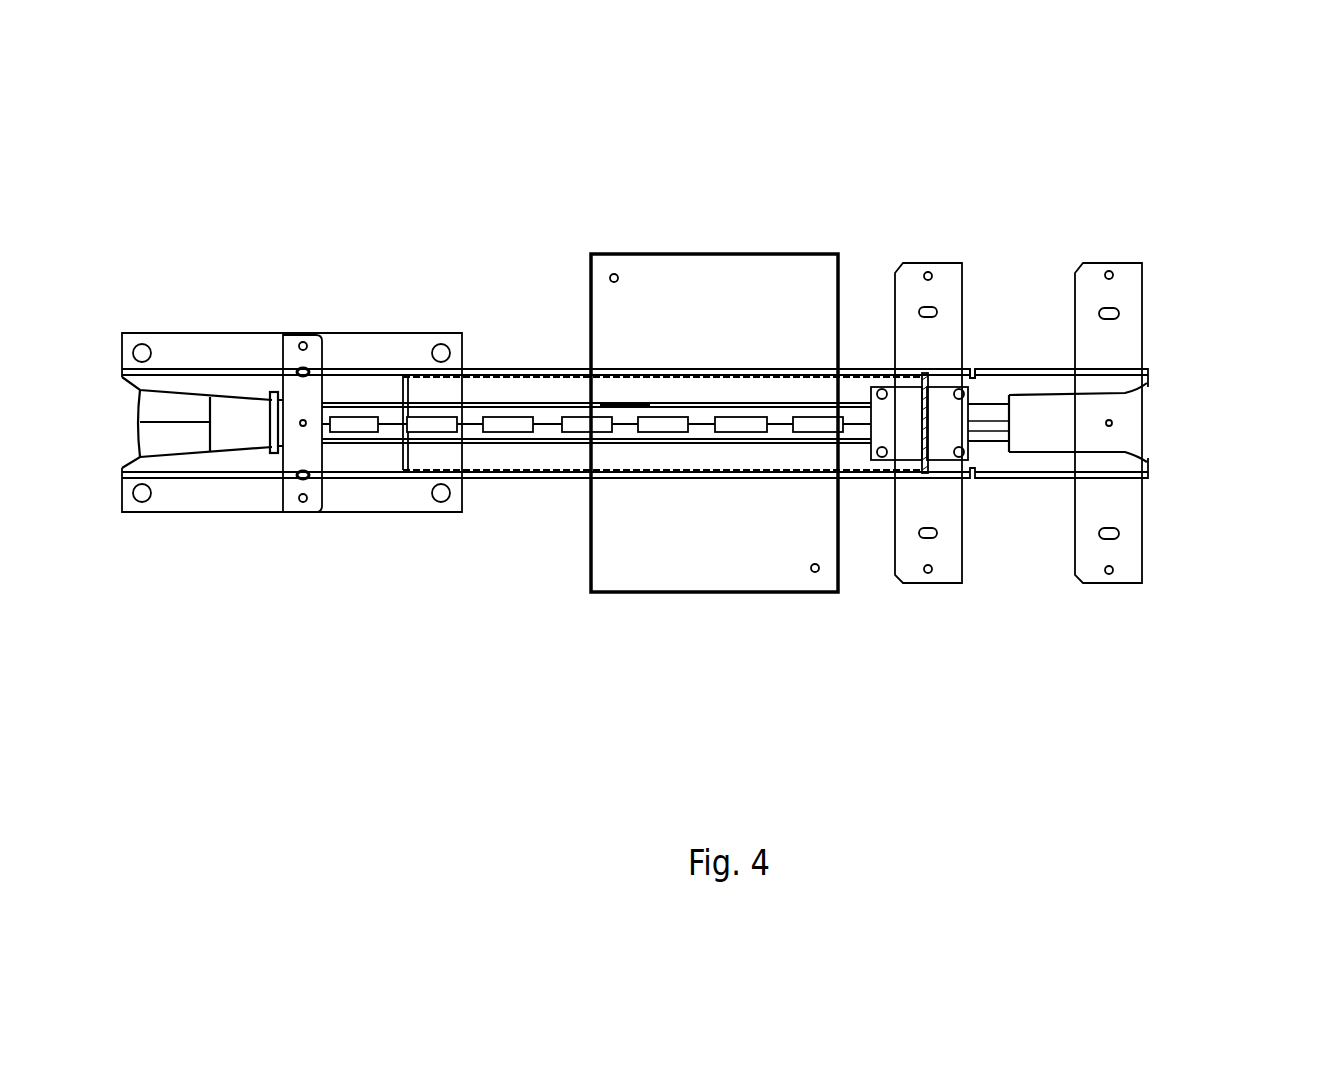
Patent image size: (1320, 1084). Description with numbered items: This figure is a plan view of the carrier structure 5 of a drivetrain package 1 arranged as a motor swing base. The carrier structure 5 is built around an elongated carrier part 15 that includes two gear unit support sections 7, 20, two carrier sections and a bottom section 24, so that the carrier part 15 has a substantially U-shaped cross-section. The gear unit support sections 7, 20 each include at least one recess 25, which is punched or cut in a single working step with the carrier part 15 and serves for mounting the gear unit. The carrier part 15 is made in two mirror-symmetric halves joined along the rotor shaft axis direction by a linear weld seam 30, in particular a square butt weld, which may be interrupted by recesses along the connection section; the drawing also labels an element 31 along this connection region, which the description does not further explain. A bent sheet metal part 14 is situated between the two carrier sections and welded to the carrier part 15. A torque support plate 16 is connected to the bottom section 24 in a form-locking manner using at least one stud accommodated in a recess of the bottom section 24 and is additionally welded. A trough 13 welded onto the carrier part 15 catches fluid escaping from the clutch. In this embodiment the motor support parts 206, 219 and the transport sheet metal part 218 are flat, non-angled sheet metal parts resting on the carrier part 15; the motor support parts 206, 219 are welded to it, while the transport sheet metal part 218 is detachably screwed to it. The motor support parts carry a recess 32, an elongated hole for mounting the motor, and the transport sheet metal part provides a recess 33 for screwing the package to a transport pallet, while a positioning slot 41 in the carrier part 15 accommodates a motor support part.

The drivetrain package 1 is at (1213, 270).
The carrier structure 5 is at (540, 591).
The gear unit support section 7 is at (203, 515).
The trough 13 is at (730, 538).
The sheet metal part 14 is at (404, 456).
The carrier part 15 is at (518, 389).
The torque support plate 16 is at (943, 446).
The gear unit support section 20 is at (343, 352).
The bottom section 24 is at (622, 406).
The recess 25 is at (140, 503).
The weld seam 30 is at (473, 419).
The segment 31 is at (659, 414).
The recess 32 is at (1124, 533).
The recess 33 is at (1112, 579).
The positioning slot 41 is at (979, 364).
The motor support part 206 is at (1090, 278).
The transport sheet metal part 218 is at (298, 492).
The motor support part 219 is at (910, 278).